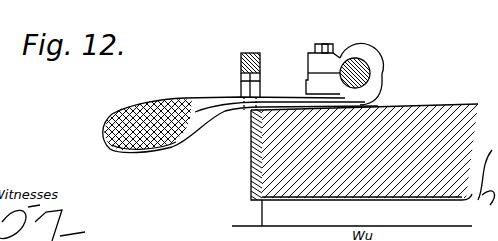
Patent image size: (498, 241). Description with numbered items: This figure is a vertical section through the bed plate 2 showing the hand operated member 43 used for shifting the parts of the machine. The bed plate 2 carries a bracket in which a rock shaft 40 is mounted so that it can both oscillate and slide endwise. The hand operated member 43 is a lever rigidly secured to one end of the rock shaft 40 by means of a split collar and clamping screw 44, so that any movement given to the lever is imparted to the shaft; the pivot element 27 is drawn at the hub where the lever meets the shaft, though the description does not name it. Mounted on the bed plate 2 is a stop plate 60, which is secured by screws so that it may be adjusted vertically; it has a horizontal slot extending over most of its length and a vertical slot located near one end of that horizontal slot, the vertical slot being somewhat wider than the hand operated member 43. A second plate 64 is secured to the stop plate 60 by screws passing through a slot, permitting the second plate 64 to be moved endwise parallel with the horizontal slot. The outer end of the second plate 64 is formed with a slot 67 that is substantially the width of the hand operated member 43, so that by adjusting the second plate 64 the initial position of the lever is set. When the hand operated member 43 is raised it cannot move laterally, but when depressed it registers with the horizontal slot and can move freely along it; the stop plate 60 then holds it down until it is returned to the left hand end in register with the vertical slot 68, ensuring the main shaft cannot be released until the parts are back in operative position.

The bed plate 2 is at (431, 118).
The pivot pin 27 is at (350, 60).
The rock shaft 40 is at (368, 68).
The hand operated member 43 is at (147, 118).
The split collar and clamping screw 44 is at (327, 43).
The stop plate 60 is at (251, 157).
The second plate 64 is at (241, 62).
The slot 67 is at (260, 76).
The vertical slot 68 is at (241, 85).